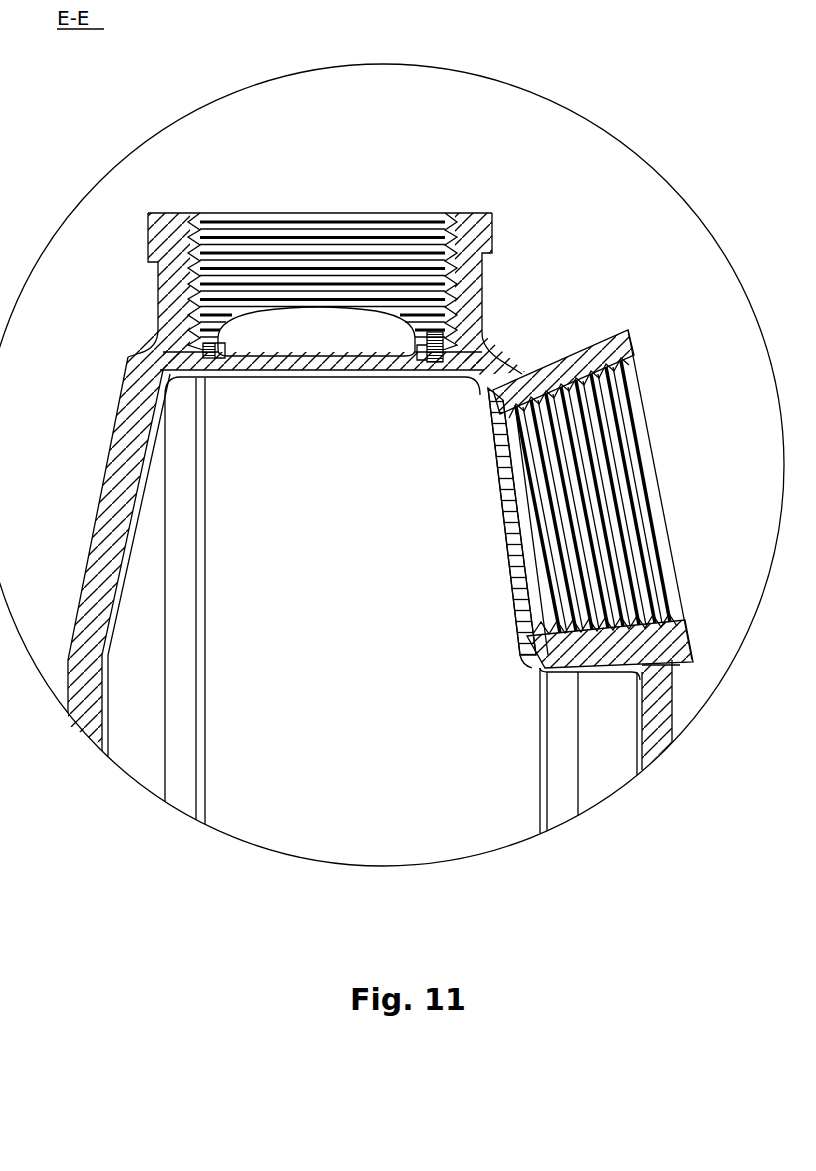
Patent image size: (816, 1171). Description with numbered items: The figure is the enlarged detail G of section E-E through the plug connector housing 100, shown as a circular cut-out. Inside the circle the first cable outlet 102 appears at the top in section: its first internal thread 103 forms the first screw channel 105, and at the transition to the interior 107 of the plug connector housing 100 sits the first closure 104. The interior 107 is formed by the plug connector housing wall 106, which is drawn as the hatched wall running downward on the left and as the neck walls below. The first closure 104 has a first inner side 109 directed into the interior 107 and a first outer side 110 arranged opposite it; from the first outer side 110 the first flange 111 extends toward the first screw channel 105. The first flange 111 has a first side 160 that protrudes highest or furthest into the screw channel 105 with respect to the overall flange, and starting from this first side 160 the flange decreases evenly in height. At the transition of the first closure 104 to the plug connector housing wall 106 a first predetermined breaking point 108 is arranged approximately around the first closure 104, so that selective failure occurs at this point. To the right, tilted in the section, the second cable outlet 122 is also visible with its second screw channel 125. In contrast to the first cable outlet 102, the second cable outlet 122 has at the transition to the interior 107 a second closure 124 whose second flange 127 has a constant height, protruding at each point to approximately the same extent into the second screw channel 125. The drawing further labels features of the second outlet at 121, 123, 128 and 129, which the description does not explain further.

The plug connector housing 100 is at (112, 385).
The first cable outlet 102 is at (148, 243).
The first internal thread 103 is at (408, 242).
The first closure 104 is at (300, 363).
The first screw channel 105 is at (323, 208).
The plug connector housing wall 106 is at (102, 520).
The interior 107 is at (236, 802).
The first predetermined breaking point 108 is at (205, 372).
The first inner side 109 is at (345, 382).
The first outer side 110 is at (349, 348).
The first flange 111 is at (213, 362).
The thread ridges 121 is at (560, 488).
The second cable outlet 122 is at (618, 336).
The bottom rim 123 is at (660, 610).
The second closure 124 is at (525, 415).
The second screw channel 125 is at (672, 470).
The second flange 127 is at (540, 425).
The side wall 128 is at (492, 398).
The flange 129 is at (498, 560).
The first side 160 is at (322, 306).
The detail G is at (628, 125).